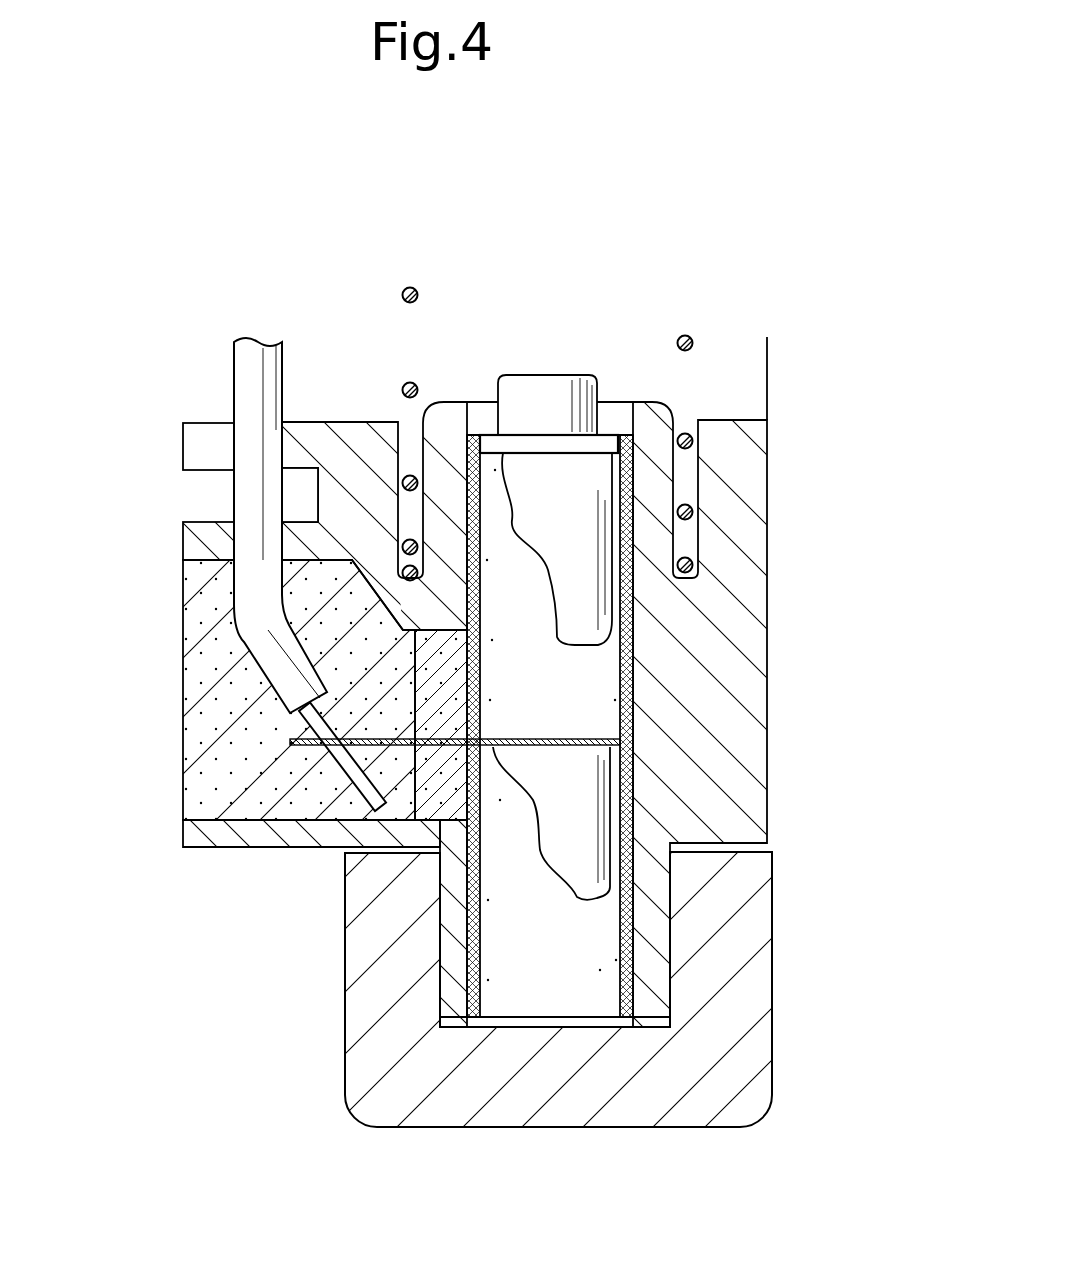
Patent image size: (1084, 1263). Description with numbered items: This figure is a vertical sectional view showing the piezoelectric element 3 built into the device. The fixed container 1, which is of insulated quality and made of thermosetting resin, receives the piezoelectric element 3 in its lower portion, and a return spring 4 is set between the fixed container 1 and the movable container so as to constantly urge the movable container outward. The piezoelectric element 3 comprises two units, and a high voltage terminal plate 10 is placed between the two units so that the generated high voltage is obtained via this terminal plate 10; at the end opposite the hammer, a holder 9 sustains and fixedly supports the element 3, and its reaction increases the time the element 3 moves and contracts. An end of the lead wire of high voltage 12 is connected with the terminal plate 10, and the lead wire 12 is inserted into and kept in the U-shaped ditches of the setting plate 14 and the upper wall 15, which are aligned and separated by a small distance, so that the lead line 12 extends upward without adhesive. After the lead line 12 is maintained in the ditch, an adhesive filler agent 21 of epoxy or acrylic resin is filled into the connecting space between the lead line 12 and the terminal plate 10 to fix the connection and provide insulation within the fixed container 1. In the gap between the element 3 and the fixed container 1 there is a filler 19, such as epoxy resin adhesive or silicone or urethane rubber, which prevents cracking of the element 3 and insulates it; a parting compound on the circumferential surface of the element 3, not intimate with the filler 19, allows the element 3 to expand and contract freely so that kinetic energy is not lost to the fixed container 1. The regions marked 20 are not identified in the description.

The fixed container 1 is at (747, 632).
The piezoelectric element 3 is at (587, 493).
The return spring 4 is at (693, 337).
The holder 9 is at (657, 1100).
The high voltage terminal plate 10 is at (400, 822).
The lead wire of high voltage 12 is at (253, 363).
The setting plate 14 is at (200, 540).
The upper wall 15 is at (200, 438).
The filler 19 is at (470, 823).
The molded material 20 is at (602, 670).
The adhesive filler agent 21 is at (192, 777).